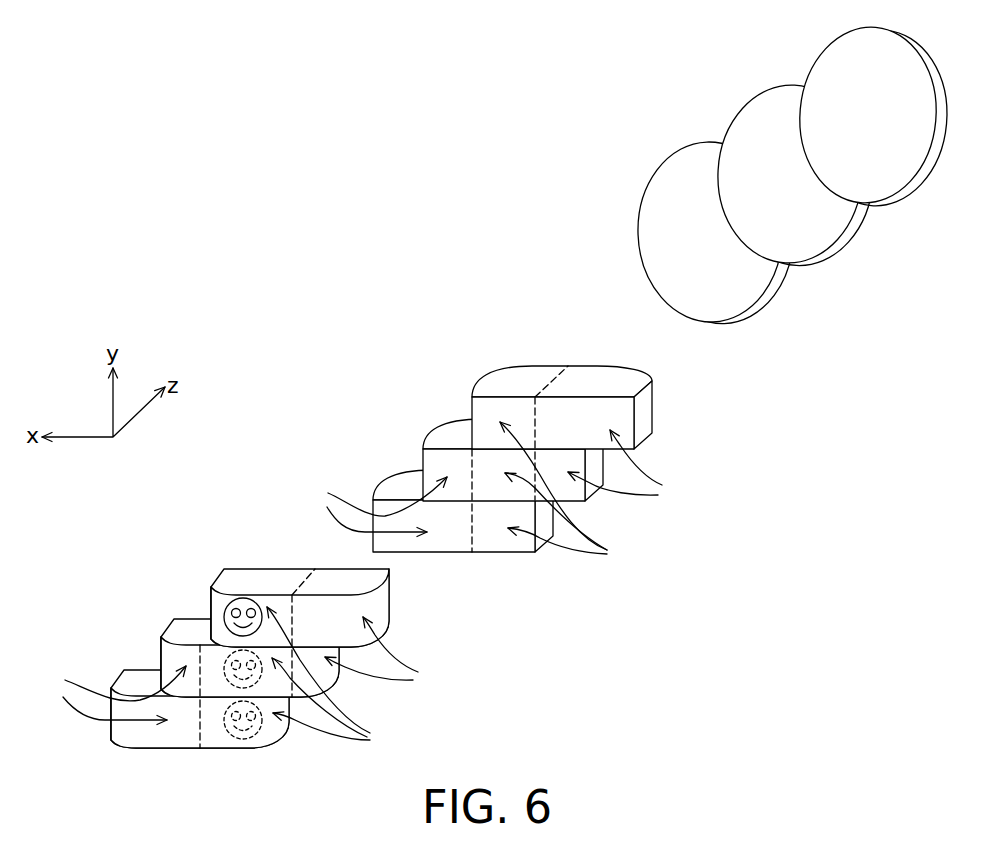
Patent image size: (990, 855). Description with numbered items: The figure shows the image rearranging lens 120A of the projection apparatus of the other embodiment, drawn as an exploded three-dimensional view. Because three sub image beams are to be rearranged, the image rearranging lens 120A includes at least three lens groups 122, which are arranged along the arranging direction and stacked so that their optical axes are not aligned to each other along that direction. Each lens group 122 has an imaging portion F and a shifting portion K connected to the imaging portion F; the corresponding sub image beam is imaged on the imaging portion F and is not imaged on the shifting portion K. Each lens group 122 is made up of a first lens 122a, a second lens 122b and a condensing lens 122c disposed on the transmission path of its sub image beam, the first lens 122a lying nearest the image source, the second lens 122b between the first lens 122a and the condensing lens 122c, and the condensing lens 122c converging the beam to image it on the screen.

The image rearranging lens 120A is at (967, 750).
The lens group 122 is at (408, 98).
The first lens 122a is at (138, 680).
The second lens 122b is at (400, 492).
The condensing lens 122c is at (843, 35).
The shifting portion K is at (364, 577).
The imaging portion F is at (447, 587).